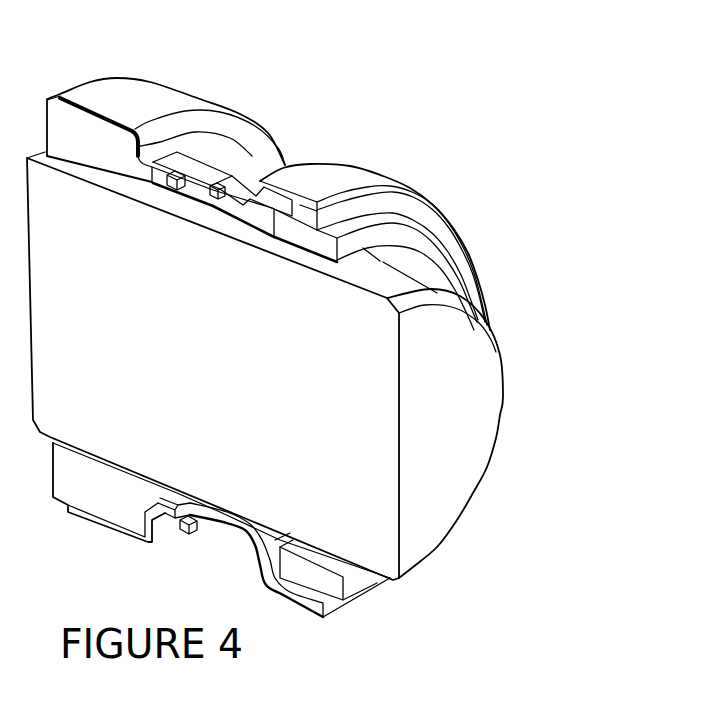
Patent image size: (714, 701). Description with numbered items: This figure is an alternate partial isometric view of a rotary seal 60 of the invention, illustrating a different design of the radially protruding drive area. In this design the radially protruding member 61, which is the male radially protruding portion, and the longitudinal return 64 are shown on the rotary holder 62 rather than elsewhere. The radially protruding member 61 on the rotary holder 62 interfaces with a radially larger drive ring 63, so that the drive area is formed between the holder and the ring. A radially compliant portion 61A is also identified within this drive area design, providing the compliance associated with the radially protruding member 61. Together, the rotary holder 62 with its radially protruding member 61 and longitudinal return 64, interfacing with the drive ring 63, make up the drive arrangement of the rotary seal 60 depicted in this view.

The rotary seal 60 is at (447, 168).
The radially protruding member 61 is at (173, 183).
The radially compliant portion 61A is at (226, 186).
The rotary holder 62 is at (322, 185).
The drive ring 63 is at (133, 106).
The longitudinal return 64 is at (200, 163).